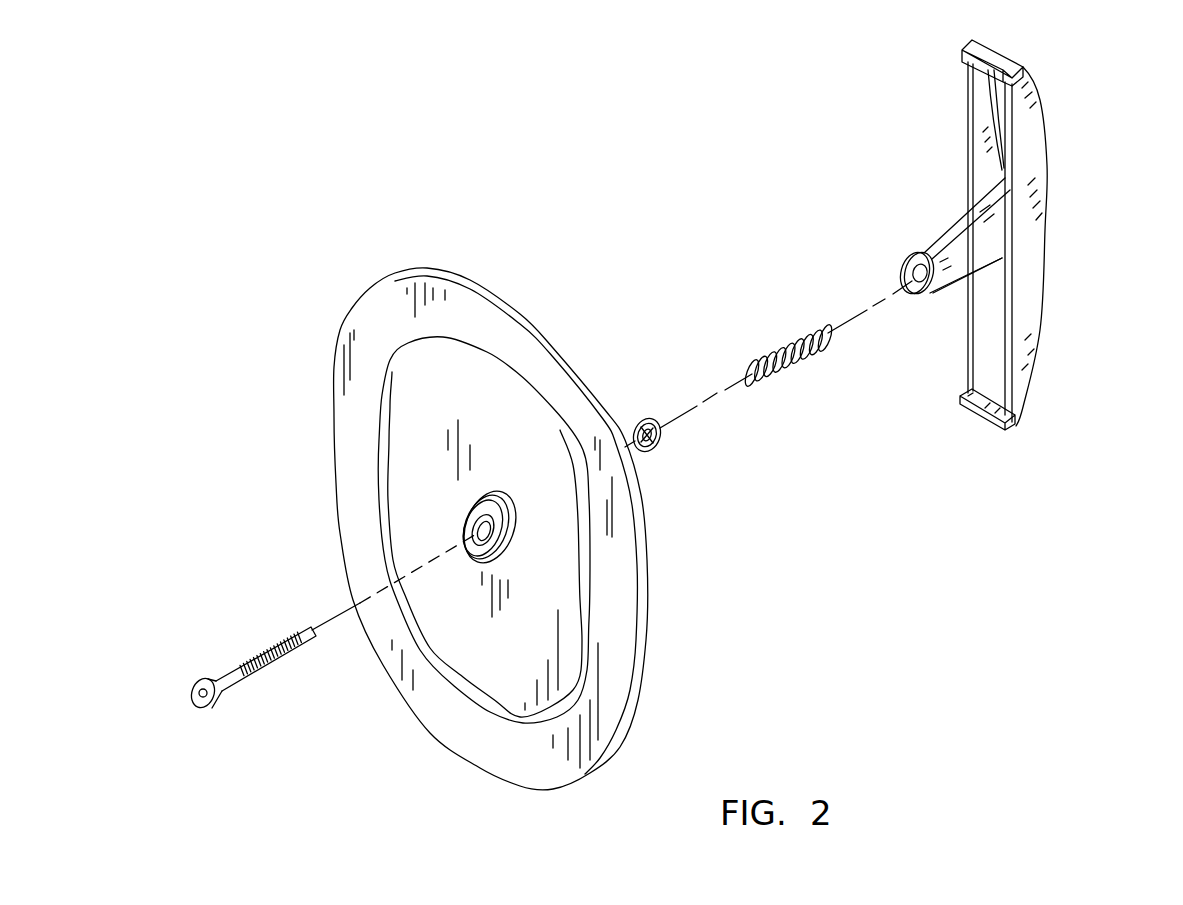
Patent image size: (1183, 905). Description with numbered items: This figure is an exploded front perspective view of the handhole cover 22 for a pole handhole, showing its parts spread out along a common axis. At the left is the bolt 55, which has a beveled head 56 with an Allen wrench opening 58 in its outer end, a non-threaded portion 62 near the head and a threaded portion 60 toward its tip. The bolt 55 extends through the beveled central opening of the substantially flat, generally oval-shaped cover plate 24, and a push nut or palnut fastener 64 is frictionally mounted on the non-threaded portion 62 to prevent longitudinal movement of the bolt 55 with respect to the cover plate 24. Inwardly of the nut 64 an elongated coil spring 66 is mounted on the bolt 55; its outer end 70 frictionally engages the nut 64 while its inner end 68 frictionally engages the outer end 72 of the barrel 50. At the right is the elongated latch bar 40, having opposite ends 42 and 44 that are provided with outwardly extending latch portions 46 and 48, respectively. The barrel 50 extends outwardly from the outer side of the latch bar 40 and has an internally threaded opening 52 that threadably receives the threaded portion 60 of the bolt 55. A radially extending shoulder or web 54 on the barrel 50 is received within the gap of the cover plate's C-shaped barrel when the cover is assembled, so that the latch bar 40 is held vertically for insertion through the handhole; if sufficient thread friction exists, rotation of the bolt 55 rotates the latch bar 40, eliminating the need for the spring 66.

The handhole cover 22 is at (340, 198).
The cover plate 24 is at (526, 265).
The latch bar 40 is at (1048, 226).
The end of latch bar 42 is at (997, 56).
The end of latch bar 44 is at (988, 432).
The latch portion 46 is at (967, 60).
The latch portion 48 is at (960, 403).
The barrel 50 is at (956, 278).
The internally threaded opening 52 is at (905, 272).
The web 54 is at (972, 218).
The bolt 55 is at (257, 638).
The beveled head 56 is at (478, 517).
The Allen wrench opening 58 is at (220, 703).
The threaded portion 60 is at (293, 653).
The non-threaded portion 62 is at (223, 673).
The push nut fastener 64 is at (642, 420).
The coil spring 66 is at (800, 328).
The inner end of spring 68 is at (833, 338).
The outer end of spring 70 is at (752, 383).
The outer end of barrel 72 is at (918, 295).